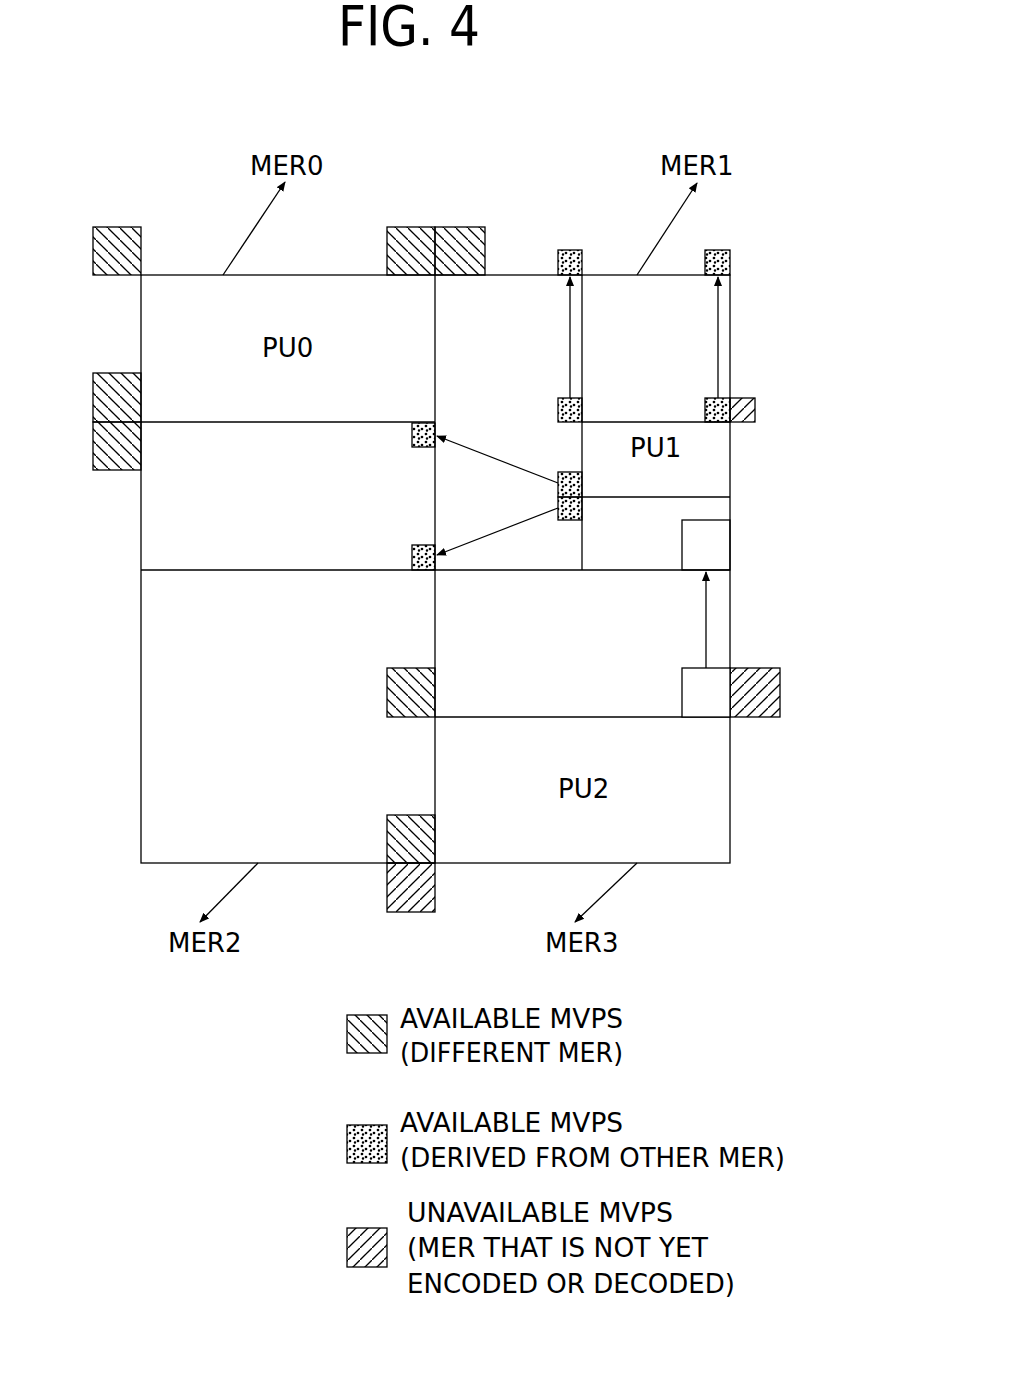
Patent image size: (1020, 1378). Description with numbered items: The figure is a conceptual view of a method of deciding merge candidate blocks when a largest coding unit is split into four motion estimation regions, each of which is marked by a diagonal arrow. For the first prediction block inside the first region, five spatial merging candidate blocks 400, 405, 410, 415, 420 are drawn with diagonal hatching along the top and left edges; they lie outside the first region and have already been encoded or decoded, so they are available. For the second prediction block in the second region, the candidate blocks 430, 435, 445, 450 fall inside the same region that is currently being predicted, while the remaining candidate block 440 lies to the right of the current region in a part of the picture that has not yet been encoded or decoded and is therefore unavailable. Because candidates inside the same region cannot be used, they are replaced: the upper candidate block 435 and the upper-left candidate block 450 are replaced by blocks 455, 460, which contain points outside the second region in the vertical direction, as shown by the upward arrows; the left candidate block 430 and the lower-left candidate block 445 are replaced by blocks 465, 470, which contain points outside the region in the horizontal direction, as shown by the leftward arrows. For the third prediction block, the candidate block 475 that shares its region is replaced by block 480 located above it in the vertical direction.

The spatial merging candidate block 400 is at (117, 397).
The spatial merging candidate block 405 is at (411, 251).
The spatial merging candidate block 410 is at (460, 251).
The spatial merging candidate block 415 is at (117, 446).
The spatial merging candidate block 420 is at (117, 251).
The merging candidate block 430 is at (558, 476).
The merging candidate block 435 is at (720, 405).
The merging candidate block 440 is at (755, 412).
The merging candidate block 445 is at (568, 521).
The merging candidate block 450 is at (558, 402).
The replaced merging candidate block 455 is at (725, 262).
The replaced merging candidate block 460 is at (570, 250).
The replaced merging candidate block 465 is at (412, 432).
The replaced merging candidate block 470 is at (412, 552).
The merging candidate block 475 is at (706, 692).
The replacement block 480 is at (706, 545).